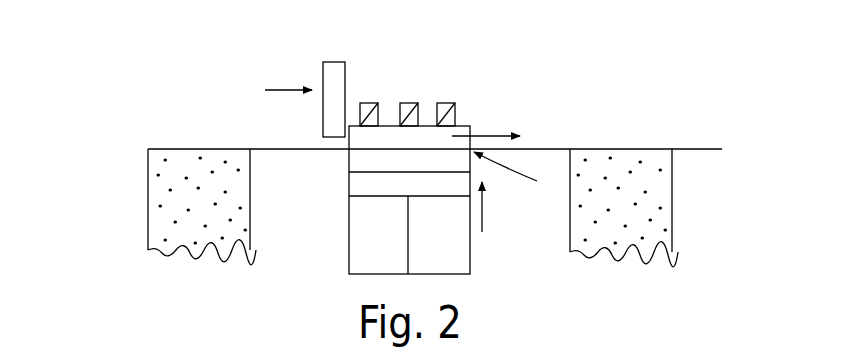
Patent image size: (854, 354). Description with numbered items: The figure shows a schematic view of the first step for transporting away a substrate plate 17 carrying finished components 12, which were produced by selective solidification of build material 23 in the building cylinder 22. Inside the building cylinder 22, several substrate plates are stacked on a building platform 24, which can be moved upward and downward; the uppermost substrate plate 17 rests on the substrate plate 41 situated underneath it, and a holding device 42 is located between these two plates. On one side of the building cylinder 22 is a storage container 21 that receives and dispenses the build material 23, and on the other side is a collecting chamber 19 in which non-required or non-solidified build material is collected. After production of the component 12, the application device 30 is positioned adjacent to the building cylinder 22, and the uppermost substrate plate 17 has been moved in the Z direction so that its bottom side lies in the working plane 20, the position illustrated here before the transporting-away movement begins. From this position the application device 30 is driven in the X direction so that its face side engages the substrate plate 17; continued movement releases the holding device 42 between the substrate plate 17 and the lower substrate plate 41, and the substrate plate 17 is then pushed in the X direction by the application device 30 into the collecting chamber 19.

The component 12 is at (448, 102).
The substrate plate 17 is at (470, 128).
The collecting chamber 19 is at (675, 183).
The working plane 20 is at (692, 148).
The storage container 21 is at (150, 172).
The building cylinder 22 is at (473, 233).
The build material 23 is at (160, 218).
The building platform 24 is at (358, 185).
The application device 30 is at (347, 72).
The substrate plate 41 is at (358, 163).
The holding device 42 is at (520, 175).